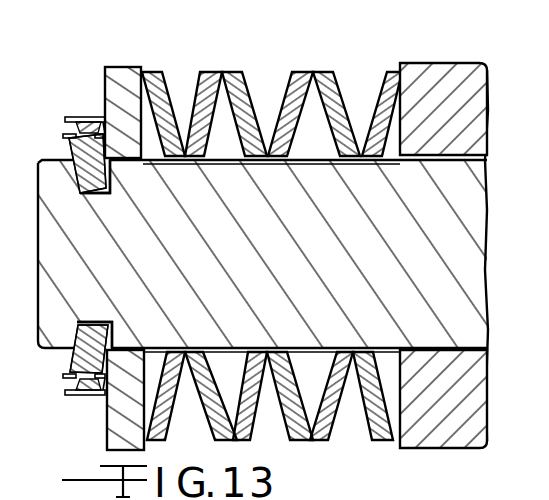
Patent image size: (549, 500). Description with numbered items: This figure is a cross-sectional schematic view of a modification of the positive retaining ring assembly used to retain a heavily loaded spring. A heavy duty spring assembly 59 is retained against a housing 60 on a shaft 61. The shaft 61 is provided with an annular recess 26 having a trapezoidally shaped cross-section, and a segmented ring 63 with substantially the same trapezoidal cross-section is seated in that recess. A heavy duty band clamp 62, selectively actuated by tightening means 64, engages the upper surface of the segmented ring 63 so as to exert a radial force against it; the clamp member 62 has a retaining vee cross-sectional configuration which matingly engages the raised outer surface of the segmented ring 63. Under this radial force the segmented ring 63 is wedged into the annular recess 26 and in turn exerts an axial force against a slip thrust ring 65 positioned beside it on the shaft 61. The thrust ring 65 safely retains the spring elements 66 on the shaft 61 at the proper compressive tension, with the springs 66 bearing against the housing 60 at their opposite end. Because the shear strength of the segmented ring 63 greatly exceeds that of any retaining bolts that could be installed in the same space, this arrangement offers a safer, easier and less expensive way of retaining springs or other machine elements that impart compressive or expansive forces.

The heavy duty spring assembly 59 is at (288, 52).
The housing 60 is at (430, 63).
The shaft 61 is at (38, 284).
The heavy duty band clamp 62 is at (77, 118).
The segmented ring 63 is at (67, 147).
The tightening means 64 is at (10, 227).
The slip thrust ring 65 is at (120, 67).
The spring elements 66 is at (202, 77).
The annular recess 26 is at (101, 195).